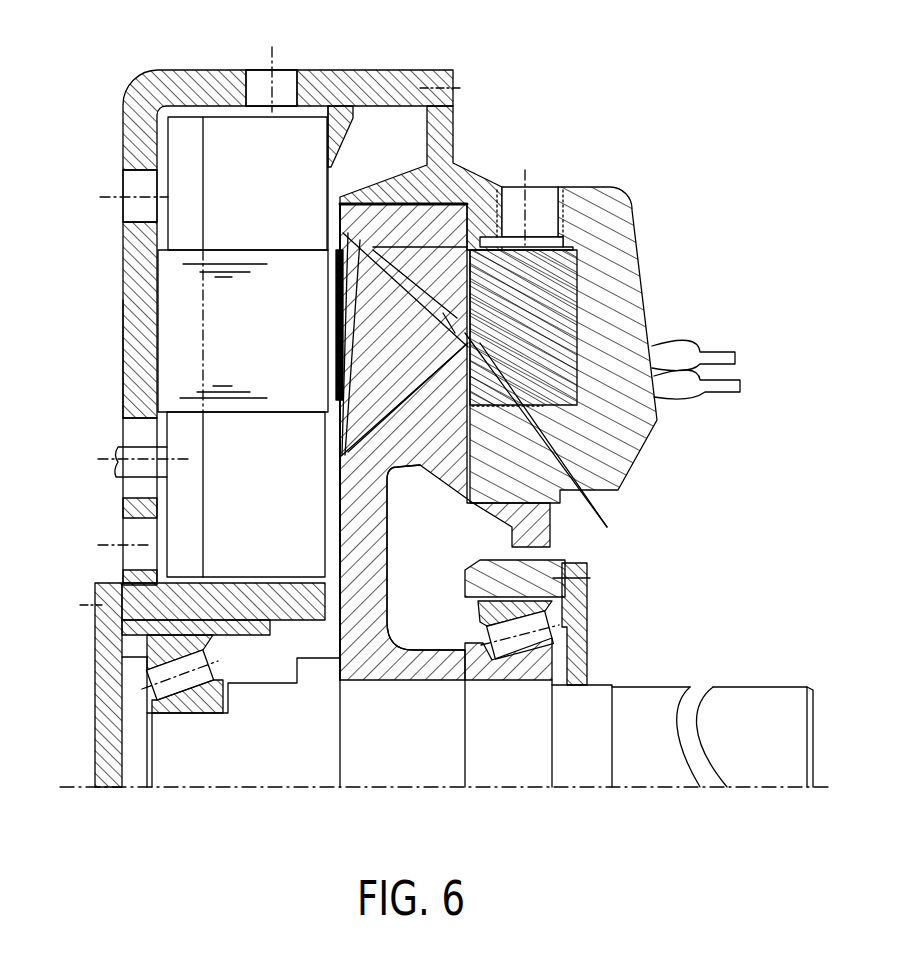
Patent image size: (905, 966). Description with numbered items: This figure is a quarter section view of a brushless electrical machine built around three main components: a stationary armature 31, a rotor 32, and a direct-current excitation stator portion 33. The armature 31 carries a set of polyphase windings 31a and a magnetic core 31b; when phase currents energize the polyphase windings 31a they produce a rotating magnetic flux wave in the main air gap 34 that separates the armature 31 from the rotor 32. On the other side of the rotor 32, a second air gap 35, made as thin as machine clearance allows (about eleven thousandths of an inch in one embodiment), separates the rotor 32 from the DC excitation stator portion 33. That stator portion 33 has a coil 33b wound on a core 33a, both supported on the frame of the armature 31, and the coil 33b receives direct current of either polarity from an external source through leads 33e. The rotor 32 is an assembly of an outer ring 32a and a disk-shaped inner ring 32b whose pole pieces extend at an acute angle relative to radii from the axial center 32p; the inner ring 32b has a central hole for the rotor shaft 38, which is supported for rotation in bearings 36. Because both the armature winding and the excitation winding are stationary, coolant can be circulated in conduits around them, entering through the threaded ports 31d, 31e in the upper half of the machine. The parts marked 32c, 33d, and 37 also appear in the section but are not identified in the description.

The armature 31 is at (120, 78).
The polyphase windings 31a is at (260, 328).
The magnetic core 31b is at (272, 207).
The port (threaded hole) 31d is at (280, 68).
The port (threaded hole) 31e is at (123, 182).
The rotor 32 is at (337, 507).
The outer ring 32a is at (400, 203).
The inner ring 32b is at (388, 570).
The gap 32c is at (600, 512).
The axial center 32p is at (115, 332).
The DC excitation stator portion 33 is at (630, 310).
The core 33a is at (645, 313).
The coil 33b is at (567, 283).
The bolt 33d is at (548, 195).
The leads 33e is at (725, 350).
The main air gap 34 is at (328, 348).
The second air gap 35 is at (423, 202).
The bearings 36 is at (212, 668).
The nut 37 is at (585, 643).
The rotor shaft 38 is at (427, 748).